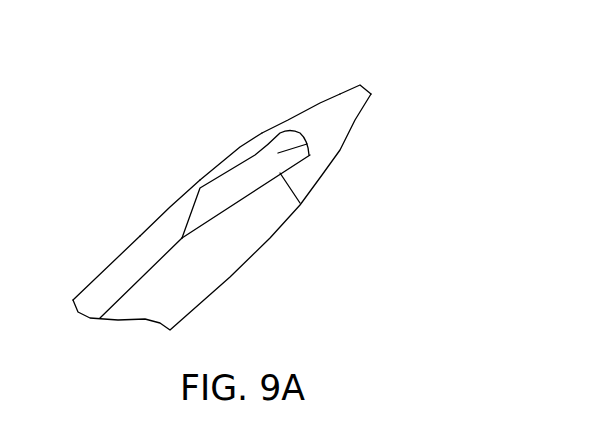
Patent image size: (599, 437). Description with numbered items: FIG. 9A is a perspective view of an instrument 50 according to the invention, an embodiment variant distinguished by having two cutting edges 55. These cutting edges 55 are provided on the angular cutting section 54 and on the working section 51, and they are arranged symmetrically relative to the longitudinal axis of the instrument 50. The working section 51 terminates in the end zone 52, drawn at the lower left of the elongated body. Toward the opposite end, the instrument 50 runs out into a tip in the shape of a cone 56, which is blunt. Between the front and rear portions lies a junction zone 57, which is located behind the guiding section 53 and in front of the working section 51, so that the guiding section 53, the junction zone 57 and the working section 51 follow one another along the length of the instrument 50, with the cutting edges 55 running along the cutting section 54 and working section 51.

The instrument 50 is at (262, 277).
The working section 51 is at (131, 239).
The end zone 52 is at (190, 162).
The guiding section 53 is at (329, 119).
The angular cutting section 54 is at (240, 143).
The cutting edges 55 is at (300, 203).
The cone 56 is at (371, 94).
The junction zone 57 is at (309, 146).